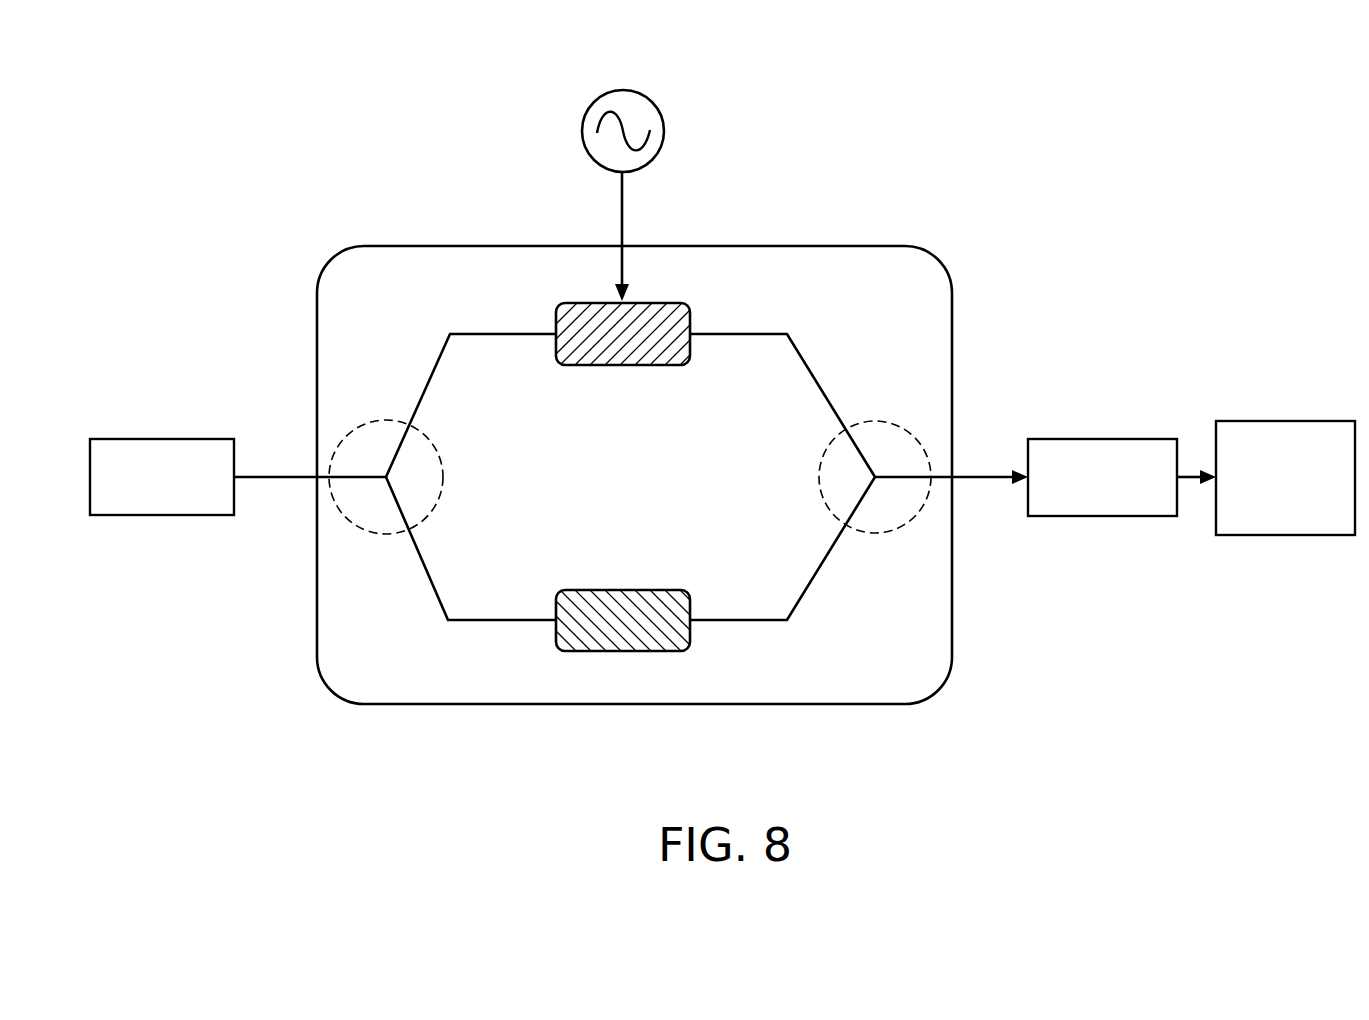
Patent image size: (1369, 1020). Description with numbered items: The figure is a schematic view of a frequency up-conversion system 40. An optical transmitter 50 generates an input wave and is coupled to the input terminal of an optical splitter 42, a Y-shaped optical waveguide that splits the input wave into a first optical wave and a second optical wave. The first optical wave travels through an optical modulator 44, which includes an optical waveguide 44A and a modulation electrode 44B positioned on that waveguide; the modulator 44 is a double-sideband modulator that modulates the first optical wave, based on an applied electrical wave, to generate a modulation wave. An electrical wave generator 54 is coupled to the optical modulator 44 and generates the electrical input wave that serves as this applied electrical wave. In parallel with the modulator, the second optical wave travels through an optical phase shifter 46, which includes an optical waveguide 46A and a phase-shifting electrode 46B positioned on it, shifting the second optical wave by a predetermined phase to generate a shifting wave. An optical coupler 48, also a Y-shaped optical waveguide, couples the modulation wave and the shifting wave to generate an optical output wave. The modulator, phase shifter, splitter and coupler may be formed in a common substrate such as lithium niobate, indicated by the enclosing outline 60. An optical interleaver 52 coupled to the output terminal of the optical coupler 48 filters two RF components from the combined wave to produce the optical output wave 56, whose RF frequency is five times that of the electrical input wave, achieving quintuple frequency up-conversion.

The frequency up-conversion system 40 is at (983, 87).
The optical splitter 42 is at (343, 440).
The optical modulator 44 is at (630, 316).
The optical waveguide 44A is at (778, 332).
The modulation electrode 44B is at (665, 302).
The optical phase shifter 46 is at (630, 644).
The optical waveguide 46A is at (510, 622).
The phase-shifting electrode 46B is at (571, 652).
The optical coupler 48 is at (925, 452).
The optical transmitter 50 is at (161, 439).
The optical interleaver 52 is at (1102, 439).
The electrical wave generator 54 is at (597, 100).
The optical output wave 56 is at (1287, 421).
The modulator housing / chip 60 is at (935, 297).